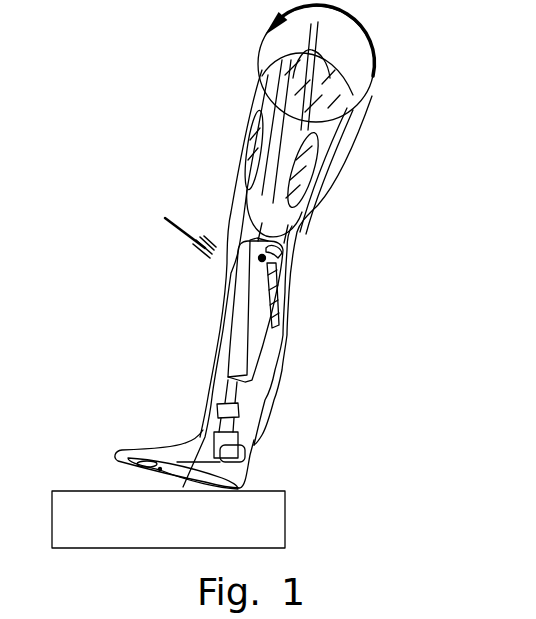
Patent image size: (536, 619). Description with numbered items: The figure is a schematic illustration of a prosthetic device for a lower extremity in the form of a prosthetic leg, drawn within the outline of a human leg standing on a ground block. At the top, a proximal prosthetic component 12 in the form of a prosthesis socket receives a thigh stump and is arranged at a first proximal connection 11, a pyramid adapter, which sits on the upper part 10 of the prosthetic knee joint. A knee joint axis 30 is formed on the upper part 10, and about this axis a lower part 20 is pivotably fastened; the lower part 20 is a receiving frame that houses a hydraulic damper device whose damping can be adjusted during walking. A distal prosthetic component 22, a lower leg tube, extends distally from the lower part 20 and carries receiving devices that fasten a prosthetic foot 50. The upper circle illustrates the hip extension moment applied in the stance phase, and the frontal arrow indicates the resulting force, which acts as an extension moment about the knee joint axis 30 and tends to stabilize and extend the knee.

The upper part 10 is at (282, 257).
The first proximal connection 11 is at (299, 234).
The proximal prosthetic component 12 is at (350, 116).
The lower part 20 is at (283, 333).
The distal prosthetic component 22 is at (246, 398).
The knee joint axis 30 is at (276, 268).
The prosthetic foot 50 is at (250, 468).